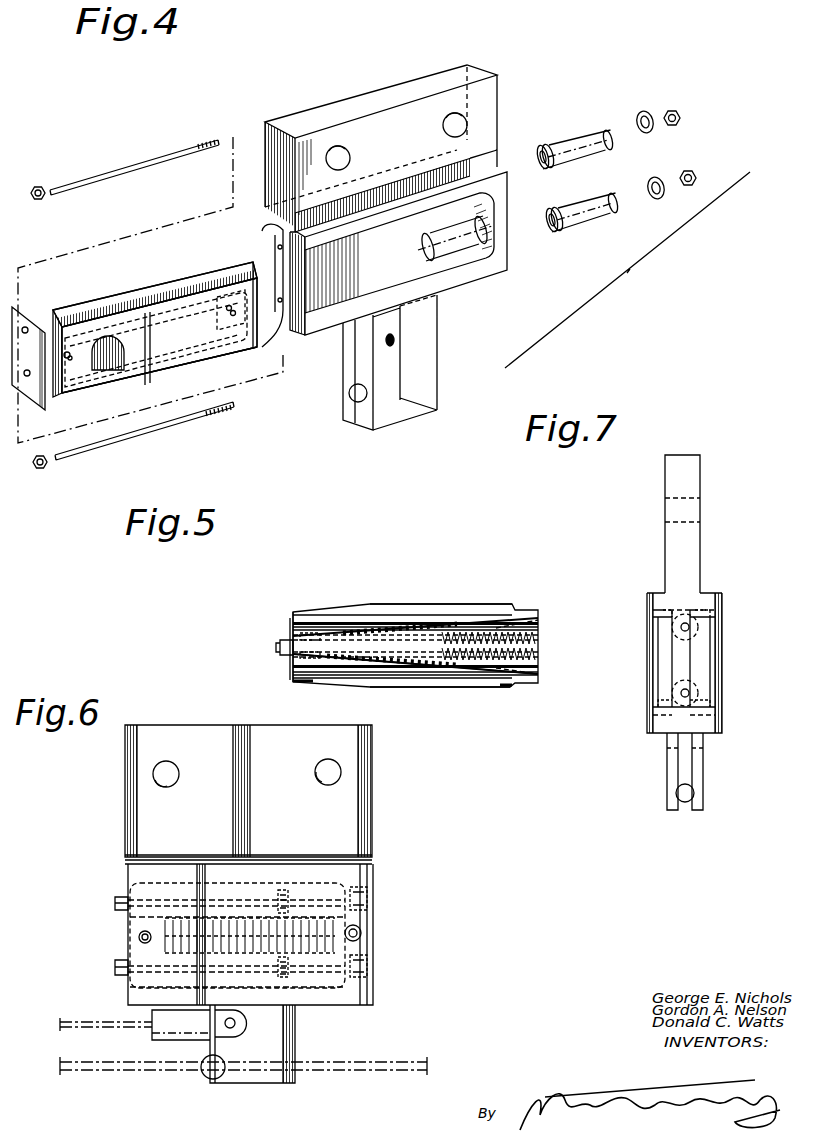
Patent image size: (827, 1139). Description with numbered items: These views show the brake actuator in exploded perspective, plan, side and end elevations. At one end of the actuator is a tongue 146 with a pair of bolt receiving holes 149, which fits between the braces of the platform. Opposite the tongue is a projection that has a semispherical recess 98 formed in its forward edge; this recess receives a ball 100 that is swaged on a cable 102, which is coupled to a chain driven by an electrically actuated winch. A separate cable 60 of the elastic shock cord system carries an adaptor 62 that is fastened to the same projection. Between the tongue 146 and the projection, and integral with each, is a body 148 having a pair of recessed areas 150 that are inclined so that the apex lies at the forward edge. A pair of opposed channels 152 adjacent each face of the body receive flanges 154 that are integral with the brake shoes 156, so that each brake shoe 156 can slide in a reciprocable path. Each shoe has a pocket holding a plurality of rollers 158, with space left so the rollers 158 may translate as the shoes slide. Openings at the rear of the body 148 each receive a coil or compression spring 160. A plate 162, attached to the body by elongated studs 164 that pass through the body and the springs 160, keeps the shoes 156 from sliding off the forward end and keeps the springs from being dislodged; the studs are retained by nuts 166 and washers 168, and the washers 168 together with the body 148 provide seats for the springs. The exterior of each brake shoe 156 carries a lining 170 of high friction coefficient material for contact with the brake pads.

In FIG. 6, the cable 60 is at (70, 1022).
In FIG. 6, the adaptor 62 is at (160, 1030).
In FIG. 4, the semispherical recess 98 is at (343, 402).
In FIG. 7, the semispherical recess 98 is at (700, 792).
In FIG. 6, the ball 100 is at (205, 1079).
In FIG. 6, the cable 102 is at (350, 1062).
In FIG. 4, the tongue 146 is at (402, 148).
In FIG. 7, the tongue 146 is at (697, 479).
In FIG. 6, the tongue 146 is at (272, 794).
In FIG. 4, the body 148 is at (510, 268).
In FIG. 7, the body 148 is at (722, 718).
In FIG. 6, the body 148 is at (368, 997).
In FIG. 4, the bolt receiving holes 149 is at (344, 152).
In FIG. 6, the bolt receiving holes 149 is at (176, 784).
In FIG. 4, the recessed areas 150 is at (157, 337).
In FIG. 7, the recessed areas 150 is at (700, 660).
In FIG. 4, the channels 152 is at (262, 238).
In FIG. 7, the channels 152 is at (672, 611).
In FIG. 4, the flanges 154 is at (108, 298).
In FIG. 4, the brake shoes 156 is at (166, 290).
In FIG. 5, the brake shoes 156 is at (290, 664).
In FIG. 6, the brake shoes 156 is at (130, 947).
In FIG. 4, the rollers 158 is at (120, 370).
In FIG. 5, the rollers 158 is at (391, 668).
In FIG. 6, the rollers 158 is at (340, 921).
In FIG. 4, the compression spring 160 is at (543, 147).
In FIG. 5, the compression spring 160 is at (498, 633).
In FIG. 6, the compression spring 160 is at (284, 890).
In FIG. 4, the plate 162 is at (27, 306).
In FIG. 5, the plate 162 is at (290, 622).
In FIG. 6, the plate 162 is at (128, 936).
In FIG. 4, the elongated studs 164 is at (138, 164).
In FIG. 5, the elongated studs 164 is at (411, 647).
In FIG. 6, the elongated studs 164 is at (133, 900).
In FIG. 4, the nuts 166 is at (39, 186).
In FIG. 5, the nuts 166 is at (280, 646).
In FIG. 6, the nuts 166 is at (115, 903).
In FIG. 4, the washers 168 is at (645, 112).
In FIG. 5, the washers 168 is at (538, 655).
In FIG. 6, the washers 168 is at (370, 893).
In FIG. 4, the lining 170 is at (192, 352).
In FIG. 5, the lining 170 is at (455, 604).